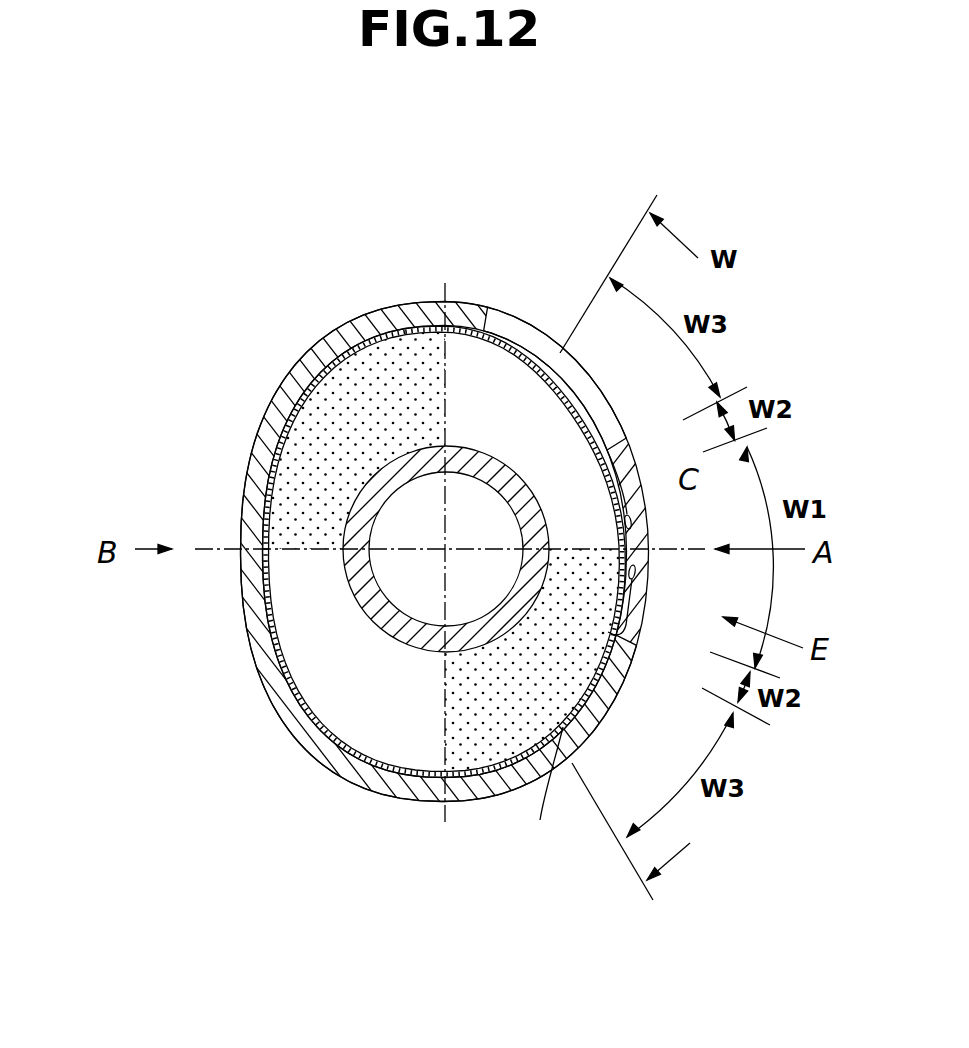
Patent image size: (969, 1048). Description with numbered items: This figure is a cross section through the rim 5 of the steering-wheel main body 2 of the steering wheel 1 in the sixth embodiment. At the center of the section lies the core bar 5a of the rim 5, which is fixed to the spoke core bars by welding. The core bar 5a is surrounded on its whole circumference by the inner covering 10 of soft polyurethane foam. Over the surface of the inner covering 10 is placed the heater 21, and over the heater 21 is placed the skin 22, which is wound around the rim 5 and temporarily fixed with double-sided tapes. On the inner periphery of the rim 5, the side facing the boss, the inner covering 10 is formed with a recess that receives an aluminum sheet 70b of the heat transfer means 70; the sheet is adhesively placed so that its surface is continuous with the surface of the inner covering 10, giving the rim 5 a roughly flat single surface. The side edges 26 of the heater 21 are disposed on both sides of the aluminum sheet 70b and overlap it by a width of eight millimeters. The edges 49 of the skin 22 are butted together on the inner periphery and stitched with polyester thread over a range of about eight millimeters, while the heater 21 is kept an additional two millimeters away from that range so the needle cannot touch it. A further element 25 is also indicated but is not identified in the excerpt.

The tire and rim assembly 1 is at (165, 290).
The steering-wheel main body 2 is at (155, 345).
The rim 5 is at (290, 380).
The core bar of the rim 5a is at (407, 592).
The inner covering 10 is at (302, 470).
The heater 21 is at (487, 333).
The skin 22 is at (510, 342).
The carcass 25 is at (365, 347).
The side edges of the heater 26 is at (577, 420).
The edges of the skin 49 is at (650, 548).
The heat transfer means 70 is at (587, 703).
The aluminum sheet 70b is at (543, 799).